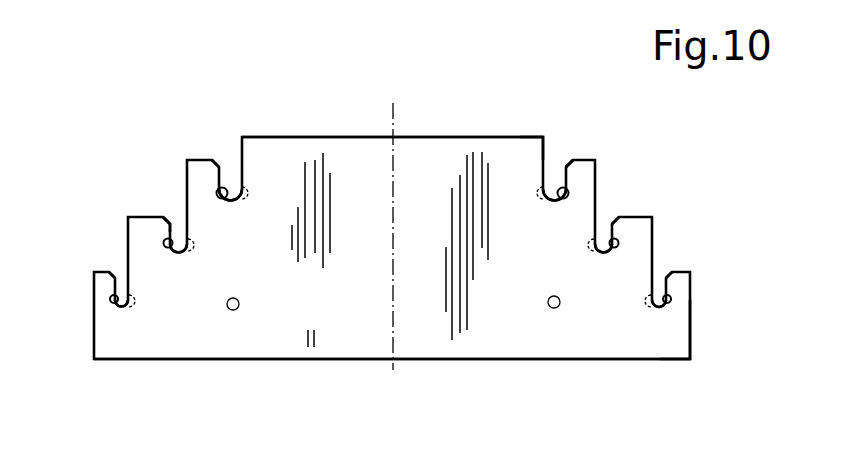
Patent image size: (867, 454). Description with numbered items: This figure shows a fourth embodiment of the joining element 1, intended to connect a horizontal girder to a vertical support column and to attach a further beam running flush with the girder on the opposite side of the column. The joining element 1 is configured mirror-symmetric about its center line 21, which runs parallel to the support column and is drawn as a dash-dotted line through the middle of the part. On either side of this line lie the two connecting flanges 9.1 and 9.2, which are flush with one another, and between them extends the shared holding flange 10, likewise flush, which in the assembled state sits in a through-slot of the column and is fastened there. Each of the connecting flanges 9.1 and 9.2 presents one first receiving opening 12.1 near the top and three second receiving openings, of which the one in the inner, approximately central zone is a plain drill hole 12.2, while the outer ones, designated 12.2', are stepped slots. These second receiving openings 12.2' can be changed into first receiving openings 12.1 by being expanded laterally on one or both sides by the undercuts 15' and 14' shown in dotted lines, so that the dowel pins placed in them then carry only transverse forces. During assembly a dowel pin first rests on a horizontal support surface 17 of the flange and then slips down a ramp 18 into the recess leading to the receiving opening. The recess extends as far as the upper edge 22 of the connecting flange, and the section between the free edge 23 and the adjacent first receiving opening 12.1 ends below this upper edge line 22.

The joining element 1 is at (489, 124).
The first connecting flange 9.1 is at (597, 343).
The second connecting flange 9.2 is at (203, 330).
The holding flange 10 is at (334, 130).
The first receiving opening 12.1 is at (222, 187).
The second receiving opening 12.2 is at (393, 303).
The second receiving opening 12.2' is at (405, 260).
The undercut 14' is at (390, 256).
The undercut 15' is at (405, 288).
The horizontal support surface 17 is at (222, 163).
The ramp 18 is at (172, 237).
The center line 21 is at (396, 132).
The upper edge 22 is at (527, 136).
The free edge 23 is at (692, 345).